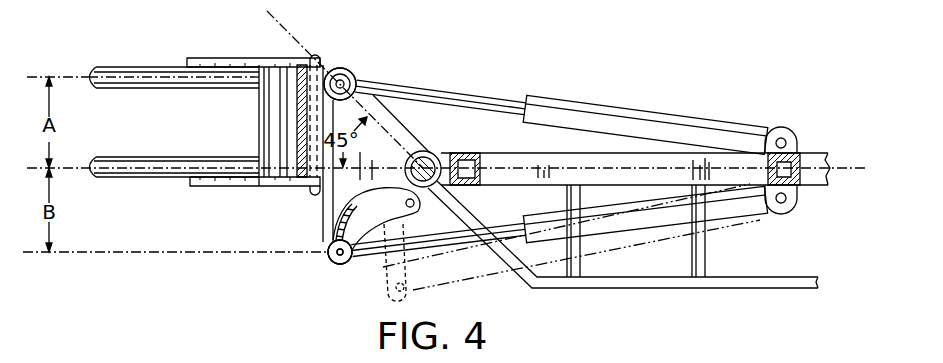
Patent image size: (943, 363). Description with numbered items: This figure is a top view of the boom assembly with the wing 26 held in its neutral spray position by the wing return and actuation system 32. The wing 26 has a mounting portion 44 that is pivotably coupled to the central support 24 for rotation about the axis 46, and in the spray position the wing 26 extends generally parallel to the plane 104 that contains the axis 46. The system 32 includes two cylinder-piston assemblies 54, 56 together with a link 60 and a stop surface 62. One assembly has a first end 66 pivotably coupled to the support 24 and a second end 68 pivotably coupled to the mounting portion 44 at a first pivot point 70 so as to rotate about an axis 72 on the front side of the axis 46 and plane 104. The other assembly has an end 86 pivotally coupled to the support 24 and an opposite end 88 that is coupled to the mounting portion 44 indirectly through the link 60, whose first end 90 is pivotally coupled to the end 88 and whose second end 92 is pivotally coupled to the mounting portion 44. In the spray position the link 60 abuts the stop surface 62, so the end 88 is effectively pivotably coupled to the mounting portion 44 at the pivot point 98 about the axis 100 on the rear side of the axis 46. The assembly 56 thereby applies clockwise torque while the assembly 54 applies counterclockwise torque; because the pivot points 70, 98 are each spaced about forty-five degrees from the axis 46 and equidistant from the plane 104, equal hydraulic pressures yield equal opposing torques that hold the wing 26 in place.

The central support 24 is at (810, 153).
The wing 26 is at (148, 67).
The wing return and actuation system 32 is at (561, 100).
The mounting portion 44 is at (322, 214).
The axis 46 is at (431, 151).
The cylinder-piston assembly 54 is at (645, 112).
The cylinder-piston assembly 56 is at (442, 250).
The link 60 is at (368, 193).
The stop surface 62 is at (337, 218).
The first end 66 is at (780, 127).
The second end 68 is at (340, 67).
The first pivot point 70 is at (358, 82).
The axis 72 is at (353, 78).
The end 86 is at (779, 215).
The end 88 is at (349, 262).
The first end 90 is at (329, 253).
The second end 92 is at (414, 207).
The pivot point 98 is at (334, 262).
The axis 100 is at (340, 256).
The plane 104 is at (848, 167).